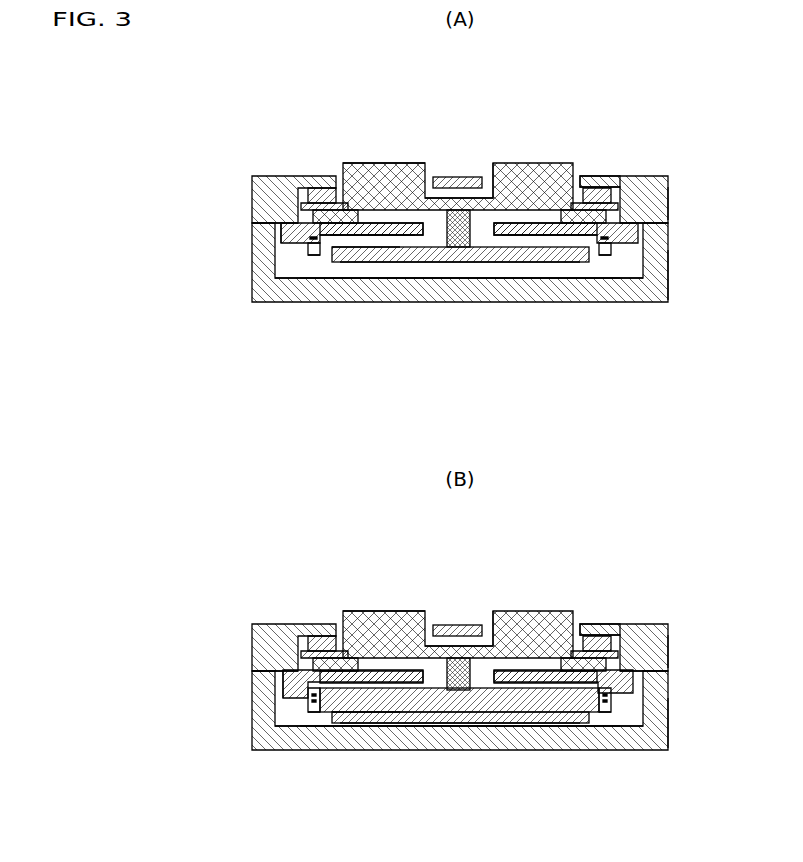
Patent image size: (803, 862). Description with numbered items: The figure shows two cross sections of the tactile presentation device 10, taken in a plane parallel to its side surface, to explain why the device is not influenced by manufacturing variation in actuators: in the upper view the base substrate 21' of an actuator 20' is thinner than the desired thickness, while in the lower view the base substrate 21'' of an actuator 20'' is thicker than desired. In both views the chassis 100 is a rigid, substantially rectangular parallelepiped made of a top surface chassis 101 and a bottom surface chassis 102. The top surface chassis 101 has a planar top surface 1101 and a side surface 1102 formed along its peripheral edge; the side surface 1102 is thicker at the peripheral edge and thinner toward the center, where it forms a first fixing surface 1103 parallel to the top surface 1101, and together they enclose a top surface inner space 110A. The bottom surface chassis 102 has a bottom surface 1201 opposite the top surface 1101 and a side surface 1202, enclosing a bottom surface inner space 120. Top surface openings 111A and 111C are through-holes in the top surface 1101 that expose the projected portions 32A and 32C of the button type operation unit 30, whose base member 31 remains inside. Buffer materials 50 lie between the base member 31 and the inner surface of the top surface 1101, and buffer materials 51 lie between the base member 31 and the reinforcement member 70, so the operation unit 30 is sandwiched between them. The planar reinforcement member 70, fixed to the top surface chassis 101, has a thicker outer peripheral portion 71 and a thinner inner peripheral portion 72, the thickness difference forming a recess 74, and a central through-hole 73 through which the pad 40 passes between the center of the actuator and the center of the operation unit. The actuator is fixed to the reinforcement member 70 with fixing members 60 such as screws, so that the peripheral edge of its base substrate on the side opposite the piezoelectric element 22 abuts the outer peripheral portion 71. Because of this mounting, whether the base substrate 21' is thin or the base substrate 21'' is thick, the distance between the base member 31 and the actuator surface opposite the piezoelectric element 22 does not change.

The tactile presentation device 10 is at (479, 425).
The chassis 100 is at (479, 466).
The top surface chassis 101 is at (668, 177).
The bottom surface chassis 102 is at (668, 302).
The top surface 1101 is at (625, 185).
The side surface 1102 is at (668, 220).
The first fixing surface 1103 is at (647, 225).
The bottom surface 1201 is at (612, 281).
The side surface 1202 is at (669, 290).
The bottom surface inner space 120 is at (560, 278).
The button type operation unit 30 is at (435, 370).
The base member 31 is at (370, 205).
The projected portion 32A is at (536, 226).
The projected portion 32C is at (393, 226).
The top surface inner space 110A is at (354, 208).
The top surface opening 111A is at (491, 159).
The top surface opening 111C is at (427, 159).
The buffer material 50 is at (318, 204).
The buffer material 51 is at (310, 192).
The actuator 20' is at (460, 298).
The actuator 20'' is at (459, 751).
The base substrate 21' is at (460, 284).
The base substrate 21'' is at (459, 738).
The piezoelectric element 22 is at (385, 262).
The pad 40 is at (462, 265).
The fixing member 60 is at (313, 256).
The reinforcement member 70 is at (453, 505).
The outer peripheral portion 71 is at (282, 240).
The inner peripheral portion 72 is at (305, 252).
The through-hole 73 is at (484, 238).
The recess 74 is at (362, 245).